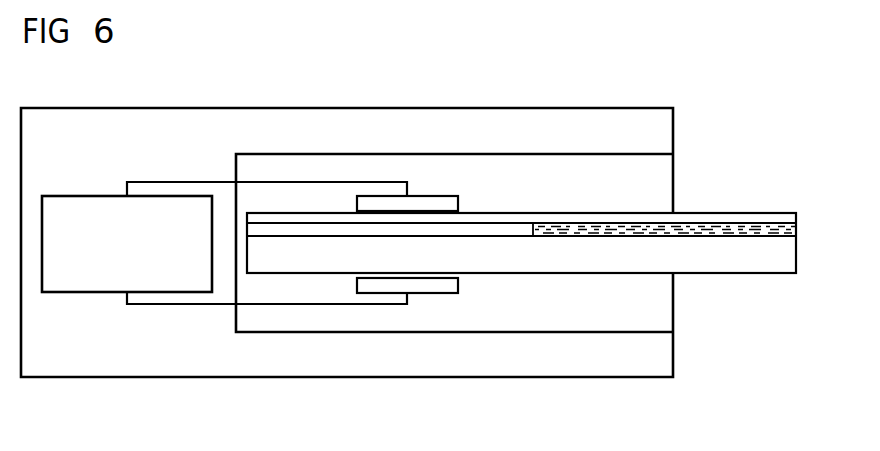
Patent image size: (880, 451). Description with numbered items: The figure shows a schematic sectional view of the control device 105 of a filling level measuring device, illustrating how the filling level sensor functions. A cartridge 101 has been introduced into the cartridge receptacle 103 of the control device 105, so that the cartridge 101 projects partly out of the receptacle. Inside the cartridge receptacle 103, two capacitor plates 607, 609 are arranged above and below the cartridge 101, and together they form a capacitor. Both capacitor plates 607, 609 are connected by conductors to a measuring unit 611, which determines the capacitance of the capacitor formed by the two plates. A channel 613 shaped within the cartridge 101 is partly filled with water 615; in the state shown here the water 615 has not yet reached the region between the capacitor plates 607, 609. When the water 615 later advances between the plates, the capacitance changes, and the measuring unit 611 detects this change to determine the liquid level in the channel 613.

The control device 105 is at (166, 108).
The cartridge receptacle 103 is at (364, 152).
The measuring unit 611 is at (97, 283).
The capacitor plate 607 is at (430, 203).
The capacitor plate 609 is at (431, 286).
The cartridge 101 is at (700, 212).
The channel 613 is at (277, 230).
The water 615 is at (757, 230).